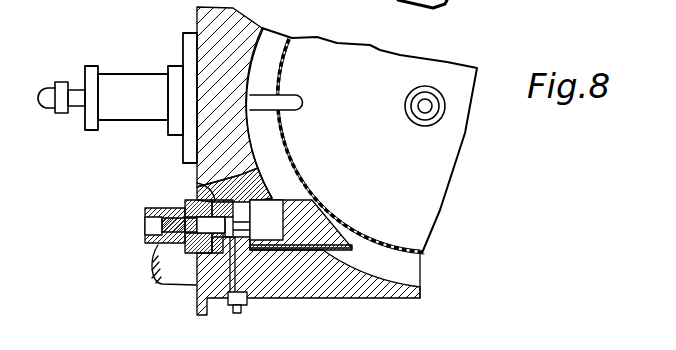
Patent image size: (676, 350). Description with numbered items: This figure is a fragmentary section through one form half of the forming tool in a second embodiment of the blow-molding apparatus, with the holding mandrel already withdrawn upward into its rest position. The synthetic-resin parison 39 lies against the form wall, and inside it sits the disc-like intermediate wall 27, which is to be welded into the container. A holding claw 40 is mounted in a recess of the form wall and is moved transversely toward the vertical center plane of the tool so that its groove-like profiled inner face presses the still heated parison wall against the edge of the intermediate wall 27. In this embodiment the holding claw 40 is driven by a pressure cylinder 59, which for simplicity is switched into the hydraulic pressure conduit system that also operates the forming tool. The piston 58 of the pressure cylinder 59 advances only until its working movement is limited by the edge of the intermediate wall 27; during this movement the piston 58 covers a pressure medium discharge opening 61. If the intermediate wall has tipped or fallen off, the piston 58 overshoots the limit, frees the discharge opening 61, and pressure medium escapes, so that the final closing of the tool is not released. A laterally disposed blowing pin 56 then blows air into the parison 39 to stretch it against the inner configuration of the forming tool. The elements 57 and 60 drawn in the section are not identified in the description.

The disc-like intermediate wall 27 is at (456, 175).
The parison 39 is at (293, 163).
The holding claw 40 is at (323, 215).
The blowing pin 56 is at (126, 78).
The pin 57 is at (268, 228).
The piston 58 is at (196, 198).
The pressure cylinder 59 is at (185, 208).
The fitting 60 is at (145, 226).
The pressure medium discharge opening 61 is at (241, 284).